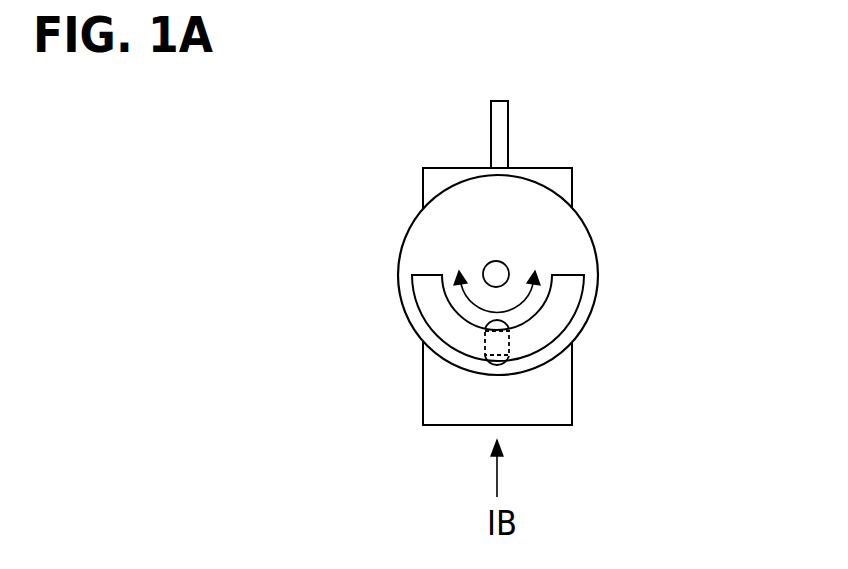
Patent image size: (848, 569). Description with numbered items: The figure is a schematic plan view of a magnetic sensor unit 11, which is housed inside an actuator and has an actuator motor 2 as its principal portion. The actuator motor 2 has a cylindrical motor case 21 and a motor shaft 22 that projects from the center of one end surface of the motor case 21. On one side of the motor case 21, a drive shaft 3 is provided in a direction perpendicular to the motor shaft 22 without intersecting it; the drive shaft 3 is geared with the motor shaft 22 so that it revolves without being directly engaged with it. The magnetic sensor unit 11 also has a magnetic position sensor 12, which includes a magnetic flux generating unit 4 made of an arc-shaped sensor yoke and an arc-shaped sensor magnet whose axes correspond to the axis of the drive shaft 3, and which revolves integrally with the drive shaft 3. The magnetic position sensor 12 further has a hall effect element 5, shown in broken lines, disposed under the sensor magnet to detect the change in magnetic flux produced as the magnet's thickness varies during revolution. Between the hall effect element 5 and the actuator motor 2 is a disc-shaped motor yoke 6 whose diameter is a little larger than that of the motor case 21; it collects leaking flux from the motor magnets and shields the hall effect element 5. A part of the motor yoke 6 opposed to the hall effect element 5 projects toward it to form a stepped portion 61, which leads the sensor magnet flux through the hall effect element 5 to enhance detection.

The actuator motor 2 is at (512, 314).
The drive shaft 3 is at (488, 272).
The magnetic flux generating unit 4 is at (430, 292).
The hall effect element 5 is at (509, 347).
The motor yoke 6 is at (578, 240).
The magnetic sensor unit 11 is at (463, 450).
The magnetic position sensor 12 is at (521, 273).
The motor case 21 is at (452, 404).
The motor shaft 22 is at (503, 125).
The stepped portion 61 is at (500, 364).